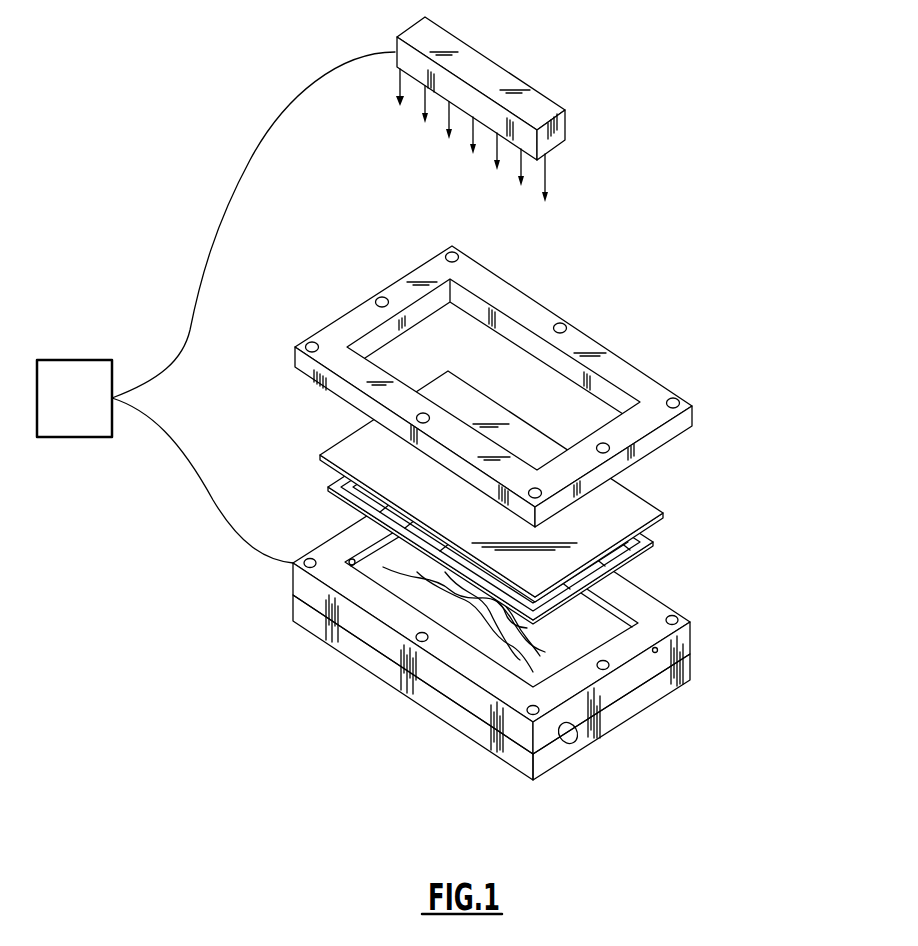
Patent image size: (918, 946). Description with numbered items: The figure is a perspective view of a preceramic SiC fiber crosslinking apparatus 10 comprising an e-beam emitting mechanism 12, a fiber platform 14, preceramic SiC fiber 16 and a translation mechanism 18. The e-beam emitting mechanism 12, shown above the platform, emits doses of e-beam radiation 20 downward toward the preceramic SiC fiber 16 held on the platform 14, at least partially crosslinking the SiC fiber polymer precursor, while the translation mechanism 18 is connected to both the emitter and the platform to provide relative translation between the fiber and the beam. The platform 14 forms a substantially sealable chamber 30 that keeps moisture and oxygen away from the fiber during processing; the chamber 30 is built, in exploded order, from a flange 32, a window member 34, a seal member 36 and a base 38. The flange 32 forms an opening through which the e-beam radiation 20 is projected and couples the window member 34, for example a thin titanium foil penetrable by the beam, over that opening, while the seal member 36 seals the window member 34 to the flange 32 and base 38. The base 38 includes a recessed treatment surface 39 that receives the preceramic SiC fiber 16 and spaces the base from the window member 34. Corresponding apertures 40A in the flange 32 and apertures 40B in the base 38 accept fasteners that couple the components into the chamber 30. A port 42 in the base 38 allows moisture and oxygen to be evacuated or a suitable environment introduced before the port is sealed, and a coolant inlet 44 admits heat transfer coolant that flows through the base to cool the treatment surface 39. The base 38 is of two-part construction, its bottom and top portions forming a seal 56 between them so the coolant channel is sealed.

The preceramic SiC fiber crosslinking apparatus 10 is at (136, 80).
The e-beam emitting mechanism 12 is at (550, 97).
The fiber platform 14 is at (536, 433).
The preceramic SiC fiber 16 is at (413, 597).
The translation mechanism 18 is at (92, 410).
The e-beam radiation 20 is at (548, 169).
The chamber 30 is at (515, 623).
The flange 32 is at (493, 385).
The window member 34 is at (368, 452).
The seal member 36 is at (320, 500).
The base 38 is at (320, 628).
The recessed treatment surface 39 is at (372, 569).
The apertures 40A is at (578, 325).
The apertures 40B is at (690, 605).
The port 42 is at (351, 558).
The coolant inlet 44 is at (578, 738).
The seal 56 is at (458, 715).